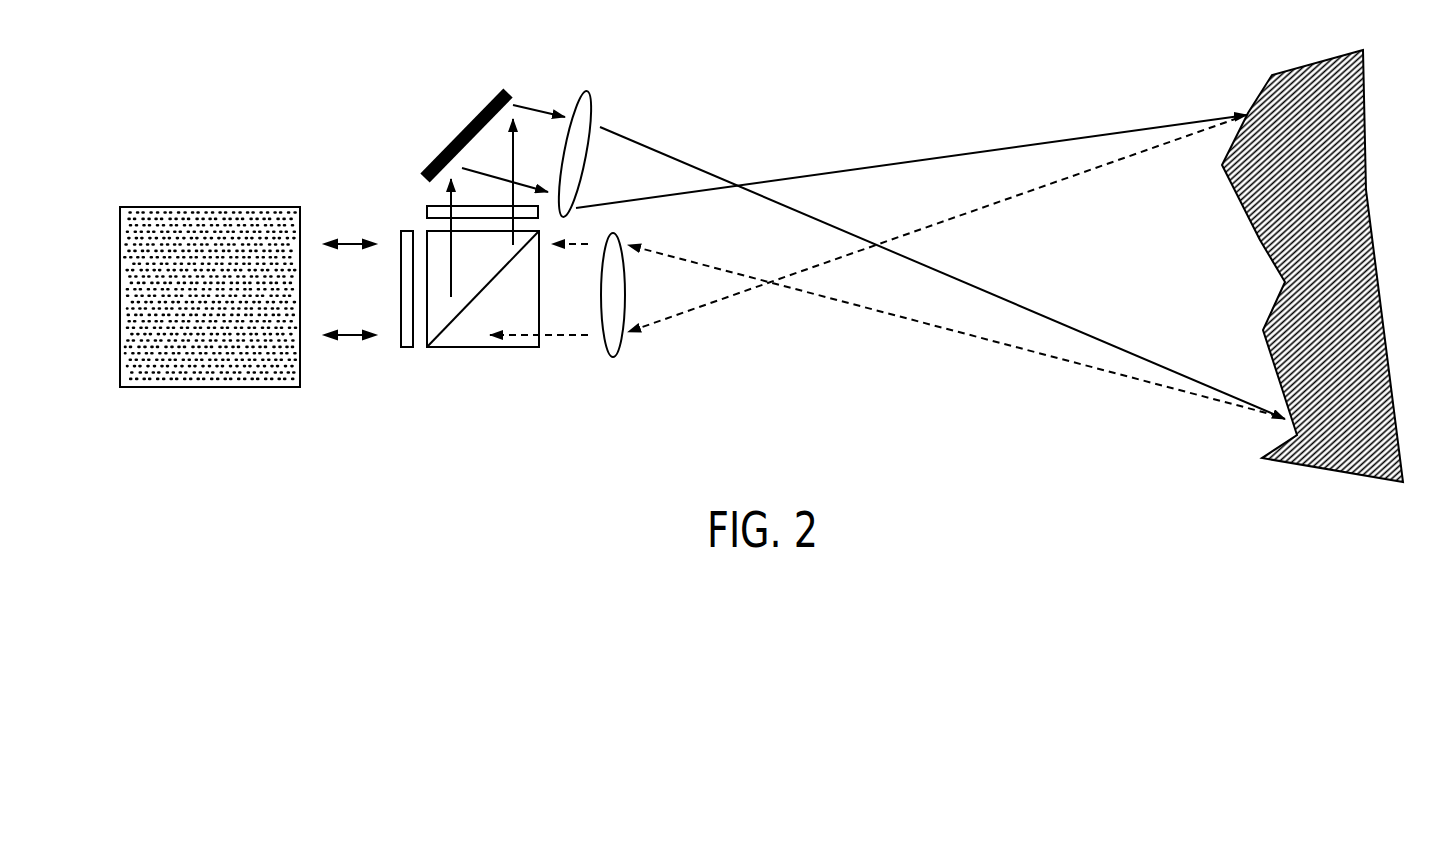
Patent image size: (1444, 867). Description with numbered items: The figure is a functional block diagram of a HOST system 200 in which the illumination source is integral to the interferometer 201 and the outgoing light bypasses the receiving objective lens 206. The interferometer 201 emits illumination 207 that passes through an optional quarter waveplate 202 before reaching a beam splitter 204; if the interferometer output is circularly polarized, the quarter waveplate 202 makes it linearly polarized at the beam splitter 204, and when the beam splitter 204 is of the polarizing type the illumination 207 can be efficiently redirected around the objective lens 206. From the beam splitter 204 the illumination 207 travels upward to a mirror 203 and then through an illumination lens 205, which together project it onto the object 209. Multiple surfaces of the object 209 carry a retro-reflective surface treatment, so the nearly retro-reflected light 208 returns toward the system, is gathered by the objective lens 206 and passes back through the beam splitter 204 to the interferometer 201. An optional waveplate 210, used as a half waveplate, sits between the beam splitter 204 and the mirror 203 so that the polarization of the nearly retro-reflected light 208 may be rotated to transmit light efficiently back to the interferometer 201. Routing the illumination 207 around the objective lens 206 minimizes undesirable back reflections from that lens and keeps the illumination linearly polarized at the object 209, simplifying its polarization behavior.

The HOST system 200 is at (1146, 99).
The interferometer 201 is at (210, 387).
The quarter waveplate 202 is at (405, 348).
The mirror 203 is at (455, 141).
The beam splitter 204 is at (480, 348).
The illumination lens 205 is at (595, 113).
The objective lens 206 is at (613, 358).
The illumination 207 is at (925, 160).
The nearly retro-reflected light 208 is at (827, 298).
The object 209 is at (1260, 238).
The waveplate 210 is at (426, 211).